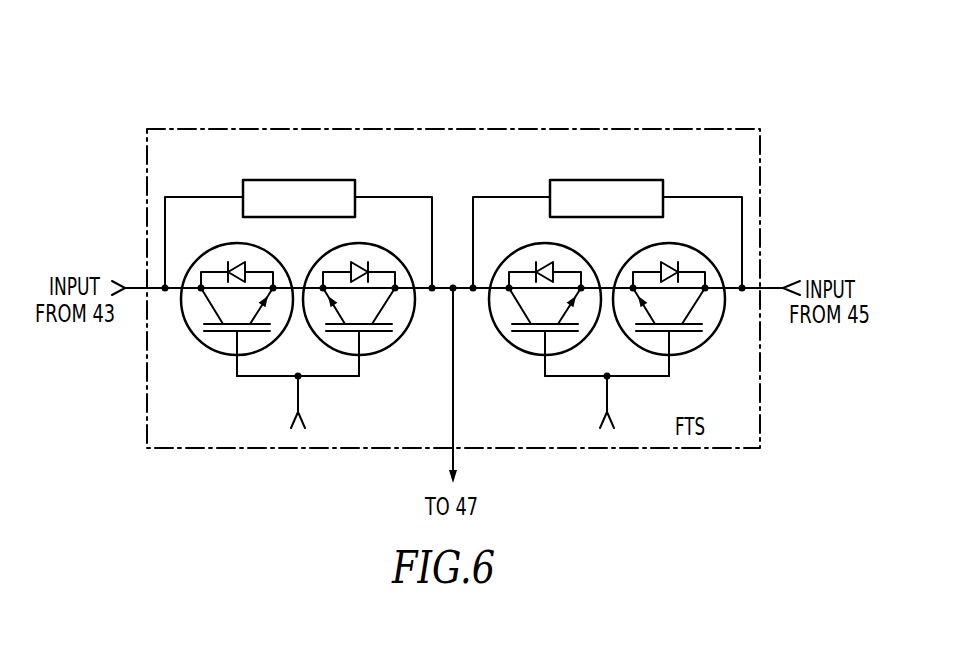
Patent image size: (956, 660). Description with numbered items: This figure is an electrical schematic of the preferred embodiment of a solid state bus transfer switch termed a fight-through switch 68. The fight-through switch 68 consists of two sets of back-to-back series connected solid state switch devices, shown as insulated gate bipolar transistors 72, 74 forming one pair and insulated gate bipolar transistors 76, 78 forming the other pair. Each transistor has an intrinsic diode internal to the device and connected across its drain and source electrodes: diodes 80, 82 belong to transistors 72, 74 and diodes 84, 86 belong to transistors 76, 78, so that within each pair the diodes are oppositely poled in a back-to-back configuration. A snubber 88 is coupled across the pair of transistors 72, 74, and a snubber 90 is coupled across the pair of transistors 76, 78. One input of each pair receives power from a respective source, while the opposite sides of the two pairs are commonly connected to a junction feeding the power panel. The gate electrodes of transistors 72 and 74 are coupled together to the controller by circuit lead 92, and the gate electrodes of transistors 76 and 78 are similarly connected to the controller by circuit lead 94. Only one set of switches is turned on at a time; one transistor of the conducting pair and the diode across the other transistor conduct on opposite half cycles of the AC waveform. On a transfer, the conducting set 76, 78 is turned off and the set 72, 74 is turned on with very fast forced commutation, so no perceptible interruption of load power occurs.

The fight-through switch 68 is at (492, 129).
The insulated gate bipolar transistor 72 is at (212, 352).
The insulated gate bipolar transistor 74 is at (388, 348).
The insulated gate bipolar transistor 76 is at (518, 353).
The insulated gate bipolar transistor 78 is at (698, 351).
The intrinsic diode 80 is at (236, 263).
The intrinsic diode 82 is at (361, 262).
The intrinsic diode 84 is at (546, 264).
The intrinsic diode 86 is at (670, 262).
The snubber 88 is at (320, 180).
The snubber 90 is at (629, 180).
The circuit lead 92 is at (298, 398).
The circuit lead 94 is at (607, 398).